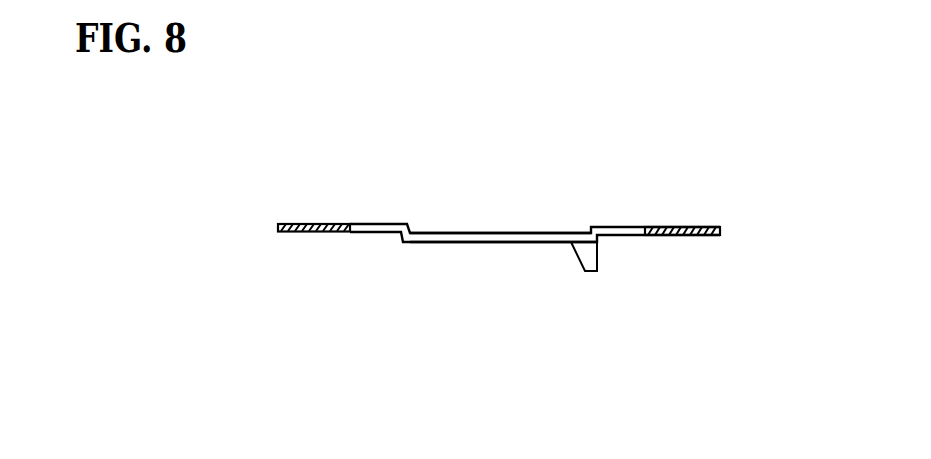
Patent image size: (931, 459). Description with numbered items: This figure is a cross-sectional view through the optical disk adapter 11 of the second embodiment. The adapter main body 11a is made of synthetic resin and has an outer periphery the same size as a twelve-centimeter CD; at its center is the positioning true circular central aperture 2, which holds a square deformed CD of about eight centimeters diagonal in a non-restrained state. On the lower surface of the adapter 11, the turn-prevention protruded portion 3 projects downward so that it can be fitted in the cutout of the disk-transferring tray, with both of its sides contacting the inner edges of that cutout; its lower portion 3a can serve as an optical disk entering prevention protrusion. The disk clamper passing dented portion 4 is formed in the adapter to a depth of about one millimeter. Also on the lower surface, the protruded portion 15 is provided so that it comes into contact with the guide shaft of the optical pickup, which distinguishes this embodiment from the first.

The positioning true circular central aperture 2 is at (365, 226).
The turn-prevention protruded portion 3 is at (400, 242).
The lower portion of the turn-prevention protruded portion 3a is at (497, 243).
The disk clamper passing dented portion 4 is at (485, 232).
The optical disk adapter 11 is at (693, 267).
The adapter main body 11a is at (675, 226).
The protruded portion 15 is at (586, 266).